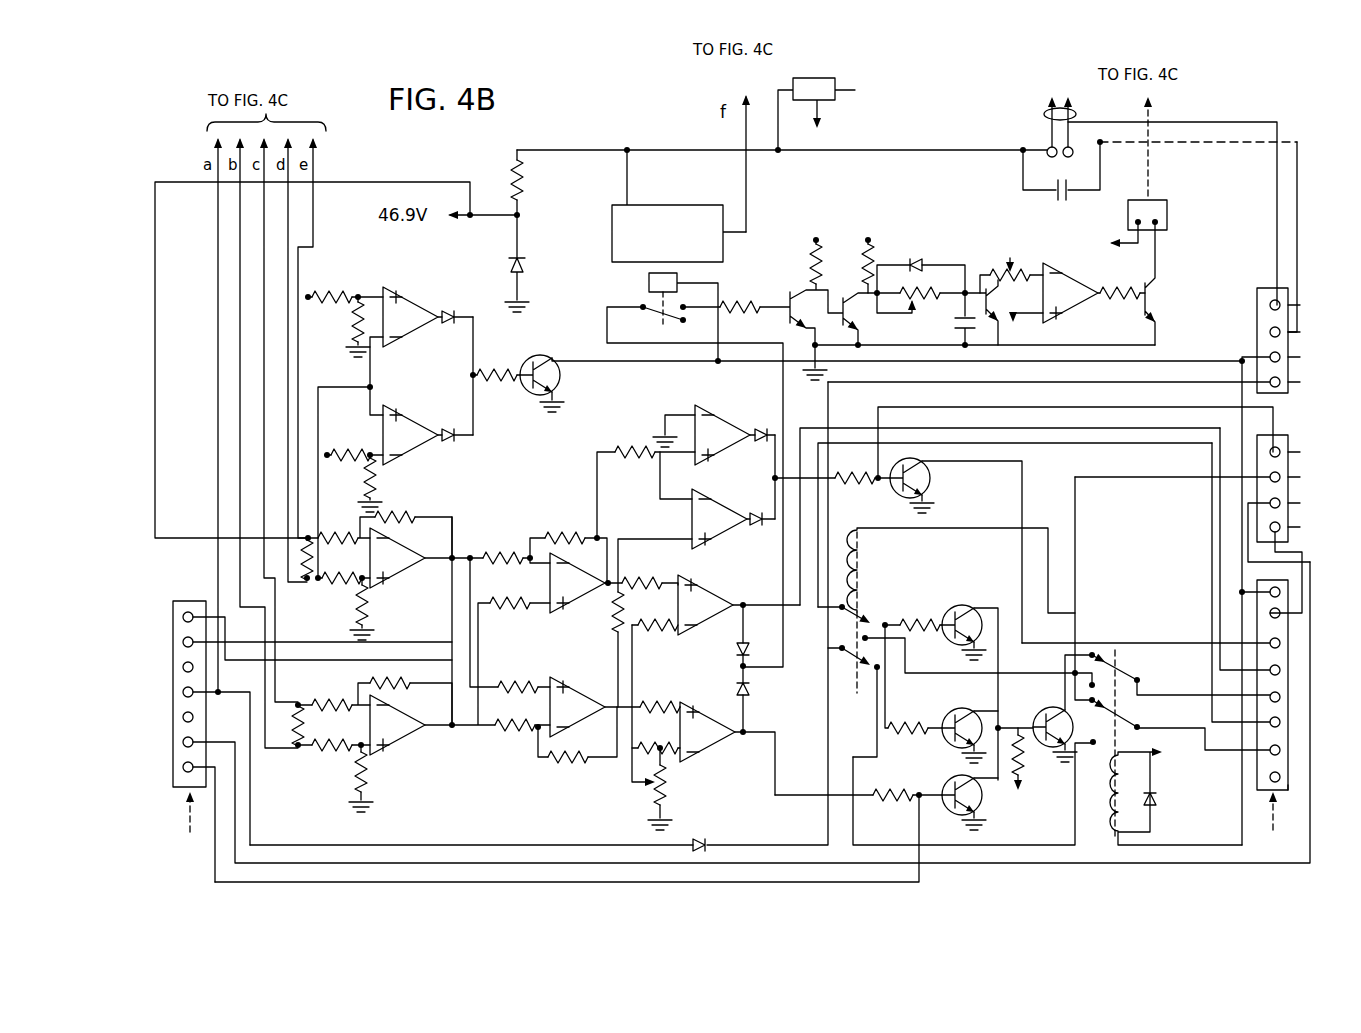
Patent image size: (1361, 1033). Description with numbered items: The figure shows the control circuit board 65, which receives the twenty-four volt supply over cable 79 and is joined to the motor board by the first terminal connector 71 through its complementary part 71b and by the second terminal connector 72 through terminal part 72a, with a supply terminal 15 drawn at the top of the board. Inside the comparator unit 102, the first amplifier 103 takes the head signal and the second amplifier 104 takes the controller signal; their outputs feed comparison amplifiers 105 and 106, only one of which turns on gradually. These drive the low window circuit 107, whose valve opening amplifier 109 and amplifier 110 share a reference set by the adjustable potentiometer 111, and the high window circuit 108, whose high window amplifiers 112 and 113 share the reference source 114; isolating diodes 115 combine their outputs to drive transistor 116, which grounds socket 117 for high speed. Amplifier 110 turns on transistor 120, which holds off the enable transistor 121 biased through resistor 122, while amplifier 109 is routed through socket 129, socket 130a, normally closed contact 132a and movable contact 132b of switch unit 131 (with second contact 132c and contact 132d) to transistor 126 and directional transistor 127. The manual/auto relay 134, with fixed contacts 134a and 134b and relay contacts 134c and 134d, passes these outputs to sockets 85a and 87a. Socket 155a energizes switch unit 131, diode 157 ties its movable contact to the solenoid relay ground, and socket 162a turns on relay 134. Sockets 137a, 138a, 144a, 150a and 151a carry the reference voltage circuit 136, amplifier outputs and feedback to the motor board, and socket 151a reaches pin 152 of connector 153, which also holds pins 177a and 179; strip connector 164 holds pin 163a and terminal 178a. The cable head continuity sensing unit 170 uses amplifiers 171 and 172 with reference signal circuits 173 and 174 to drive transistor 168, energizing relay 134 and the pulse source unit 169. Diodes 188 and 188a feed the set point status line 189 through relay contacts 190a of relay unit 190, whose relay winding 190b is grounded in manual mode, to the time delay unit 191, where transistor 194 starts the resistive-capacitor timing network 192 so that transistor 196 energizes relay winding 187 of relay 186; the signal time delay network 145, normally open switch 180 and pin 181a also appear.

The reference voltage circuit 136 is at (502, 201).
The pulse source unit 169 is at (618, 205).
The power supply 15 is at (831, 109).
The relay winding 190b is at (649, 287).
The relay unit 190 is at (620, 299).
The relay contacts 190a is at (694, 487).
The transistor 194 is at (774, 313).
The time delay unit 191 is at (926, 308).
The resistive-capacitor timing network 192 is at (952, 312).
The signal time delay network 145 is at (1012, 262).
The transistor 196 is at (1162, 299).
The relay winding 187 is at (1128, 207).
The double pole, double throw relay 186 is at (1148, 185).
The cable 79 is at (1044, 116).
The control circuit board 65 is at (1328, 240).
The strip connector 164 is at (1262, 288).
The pin 163a is at (1283, 356).
The terminal 178a is at (1283, 381).
The diode 157 is at (704, 830).
The pin and socket connector 153 is at (1262, 435).
The pin 177a is at (1283, 456).
The pin 179 is at (1283, 479).
The pin 152 is at (1283, 506).
The second terminal connector 72 is at (1272, 717).
The terminal part 72a is at (1288, 788).
The socket 162a is at (1283, 594).
The socket 155a is at (1283, 616).
The socket 117 is at (1283, 644).
The socket 129 is at (1283, 668).
The socket 85a is at (1283, 696).
The socket 130a is at (1283, 720).
The terminal socket 87a is at (1283, 748).
The cable head continuity sensing unit 170 is at (428, 366).
The amplifier 171 is at (395, 302).
The amplifier 172 is at (400, 418).
The reference signal circuit 173 is at (346, 315).
The reference signal circuit 174 is at (364, 465).
The transistor 168 is at (552, 358).
The high window circuit 108 is at (592, 476).
The reference source 114 is at (632, 423).
The high window amplifier 112 is at (705, 412).
The isolating diodes 115 is at (758, 442).
The high window amplifier 113 is at (705, 498).
The transistor 116 is at (932, 482).
The set point status line 189 is at (783, 556).
The comparator unit 102 is at (452, 661).
The first amplifier 103 is at (398, 556).
The second amplifier 104 is at (402, 752).
The comparison amplifier 105 is at (590, 604).
The comparison amplifier 106 is at (596, 694).
The low window circuit 107 is at (716, 685).
The valve opening amplifier 109 is at (714, 615).
The amplifier 110 is at (722, 756).
The isolating diode 188 is at (740, 650).
The isolating diode 188a is at (738, 689).
The adjustable potentiometer 111 is at (646, 808).
The double pole, double throw switch unit 131 is at (860, 570).
The normally closed contact 132a is at (868, 616).
The movable contact 132b is at (846, 634).
The second contact 132c is at (872, 672).
The relay contact 132d is at (872, 642).
The transistor 126 is at (966, 606).
The directional transistor 127 is at (946, 743).
The transistor 120 is at (972, 800).
The enable transistor 121 is at (1048, 704).
The resistor 122 is at (1028, 762).
The manual/auto relay 134 is at (1142, 818).
The fixed contact 134a is at (1090, 704).
The fixed contact 134b is at (1097, 656).
The relay contact 134c is at (1100, 688).
The relay contact 134d is at (1093, 745).
The normally open switch 180 is at (986, 847).
The complementary part 71b is at (180, 792).
The first terminal connector 71 is at (180, 828).
The socket 138a is at (183, 614).
The socket 144a is at (183, 641).
The socket 137a is at (183, 668).
The pin 181a is at (183, 694).
The socket 151a is at (183, 745).
The socket 150a is at (183, 768).